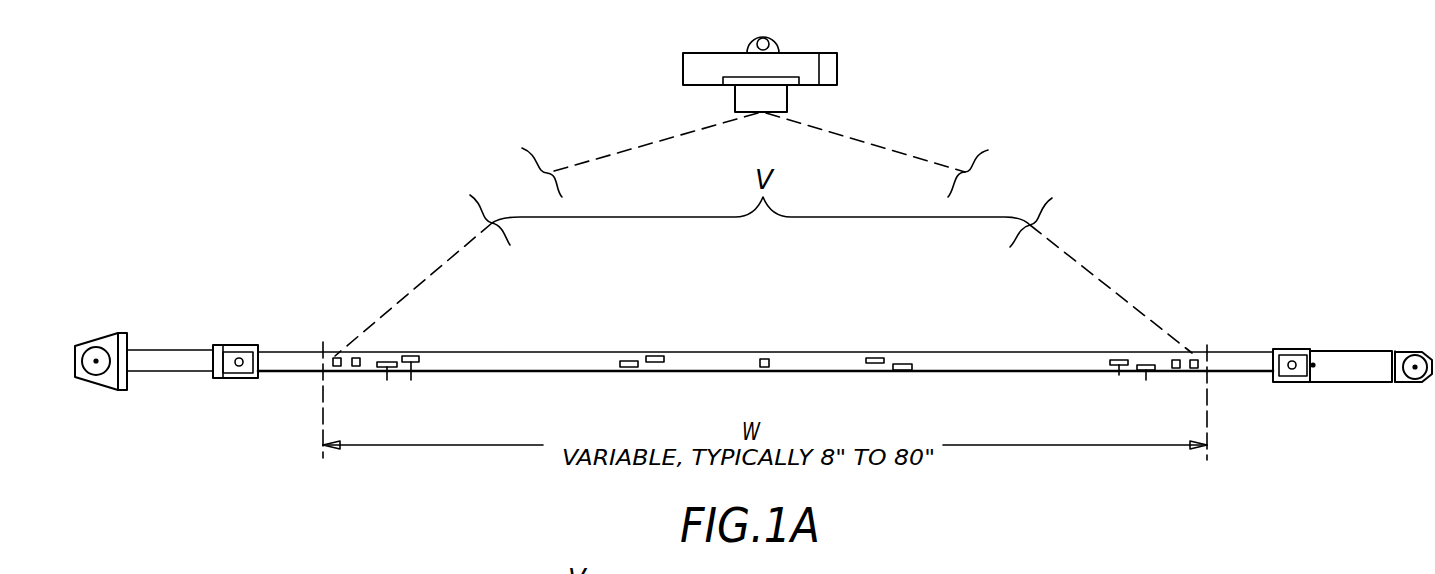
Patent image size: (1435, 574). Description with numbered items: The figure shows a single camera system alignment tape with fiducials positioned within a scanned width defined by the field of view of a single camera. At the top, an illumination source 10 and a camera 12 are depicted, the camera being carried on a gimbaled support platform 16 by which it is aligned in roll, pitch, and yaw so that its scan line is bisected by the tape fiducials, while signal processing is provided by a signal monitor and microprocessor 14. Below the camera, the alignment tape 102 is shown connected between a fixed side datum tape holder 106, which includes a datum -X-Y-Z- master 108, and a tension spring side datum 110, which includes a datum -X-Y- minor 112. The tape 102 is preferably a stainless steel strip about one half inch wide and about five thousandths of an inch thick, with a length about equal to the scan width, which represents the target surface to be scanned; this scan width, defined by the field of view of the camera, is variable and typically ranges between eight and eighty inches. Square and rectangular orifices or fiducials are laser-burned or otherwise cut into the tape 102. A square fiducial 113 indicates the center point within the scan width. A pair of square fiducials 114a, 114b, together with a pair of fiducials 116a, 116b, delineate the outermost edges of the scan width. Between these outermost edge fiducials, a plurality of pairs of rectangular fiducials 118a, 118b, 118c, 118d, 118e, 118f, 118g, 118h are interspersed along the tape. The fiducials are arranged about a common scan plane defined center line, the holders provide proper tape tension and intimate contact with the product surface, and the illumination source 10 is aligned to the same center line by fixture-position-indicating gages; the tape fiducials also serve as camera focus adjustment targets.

The illumination source 10 is at (737, 79).
The camera 12 is at (787, 100).
The signal monitor and microprocessor 14 is at (837, 72).
The gimbaled support platform 16 is at (779, 45).
The alignment tape 102 is at (473, 362).
The fixed side datum tape holder 106 is at (167, 362).
The datum -X-Y-Z- master 108 is at (96, 346).
The tension spring side datum 110 is at (1345, 355).
The datum -X-Y- minor 112 is at (1418, 355).
The square fiducial 113 is at (764, 359).
The square fiducial 114a is at (337, 357).
The square fiducial 114b is at (356, 358).
The fiducial 116a is at (1176, 358).
The fiducial 116b is at (1195, 358).
The rectangular fiducial 118a is at (387, 380).
The rectangular fiducial 118b is at (411, 380).
The rectangular fiducial 118c is at (628, 360).
The rectangular fiducial 118d is at (655, 356).
The rectangular fiducial 118e is at (876, 358).
The rectangular fiducial 118f is at (903, 363).
The rectangular fiducial 118g is at (1119, 375).
The rectangular fiducial 118h is at (1146, 380).